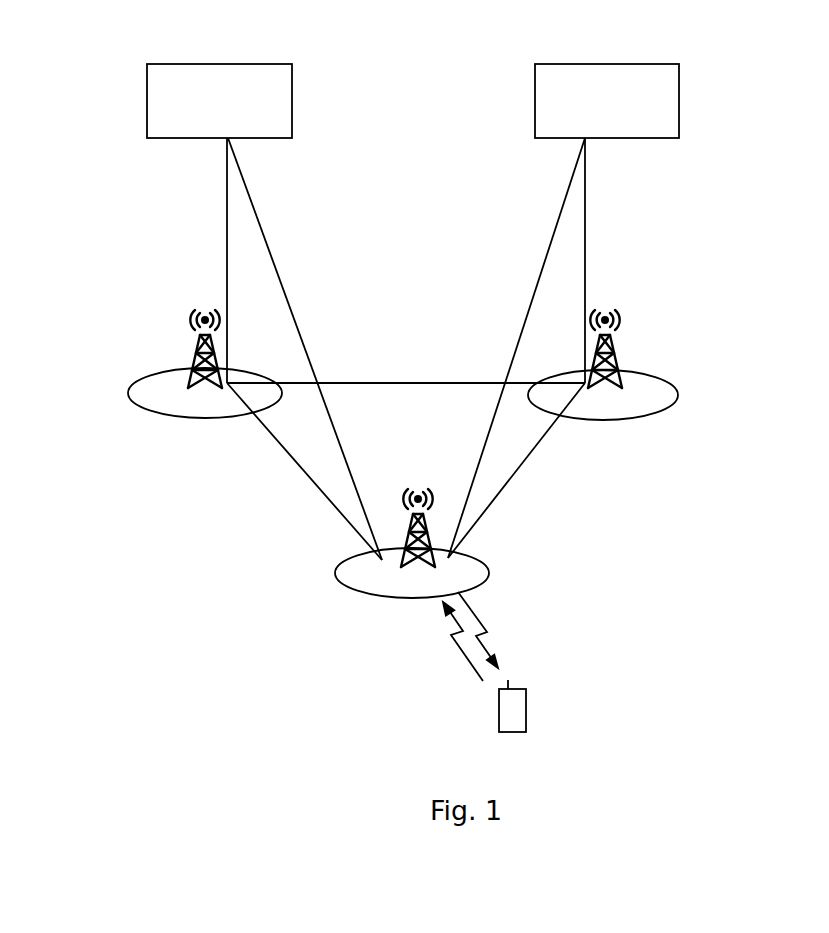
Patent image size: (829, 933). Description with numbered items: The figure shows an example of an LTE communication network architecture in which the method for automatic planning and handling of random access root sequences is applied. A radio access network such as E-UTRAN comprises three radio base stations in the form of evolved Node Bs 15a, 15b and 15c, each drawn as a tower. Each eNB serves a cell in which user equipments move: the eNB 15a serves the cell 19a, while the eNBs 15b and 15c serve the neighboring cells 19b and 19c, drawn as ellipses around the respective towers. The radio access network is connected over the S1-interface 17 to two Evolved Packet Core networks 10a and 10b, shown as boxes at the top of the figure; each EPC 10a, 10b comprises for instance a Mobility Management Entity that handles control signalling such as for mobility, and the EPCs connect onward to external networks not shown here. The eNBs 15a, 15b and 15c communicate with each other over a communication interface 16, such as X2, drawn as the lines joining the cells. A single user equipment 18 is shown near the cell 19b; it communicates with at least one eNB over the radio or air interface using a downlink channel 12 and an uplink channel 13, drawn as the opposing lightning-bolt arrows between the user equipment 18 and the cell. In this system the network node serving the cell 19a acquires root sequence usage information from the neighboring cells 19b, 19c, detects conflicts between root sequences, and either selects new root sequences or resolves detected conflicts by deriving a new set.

The Evolved Packet Core network 10a is at (219, 101).
The Evolved Packet Core network 10b is at (607, 101).
The downlink channel 12 is at (469, 603).
The uplink channel 13 is at (467, 663).
The evolved Node B 15a is at (192, 352).
The evolved Node B 15b is at (403, 568).
The evolved Node B 15c is at (622, 352).
The communication interface 16 is at (385, 383).
The S1-interface 17 is at (227, 237).
The user equipment 18 is at (528, 708).
The cell 19a is at (130, 392).
The neighboring cell 19b is at (337, 573).
The neighboring cell 19c is at (678, 397).